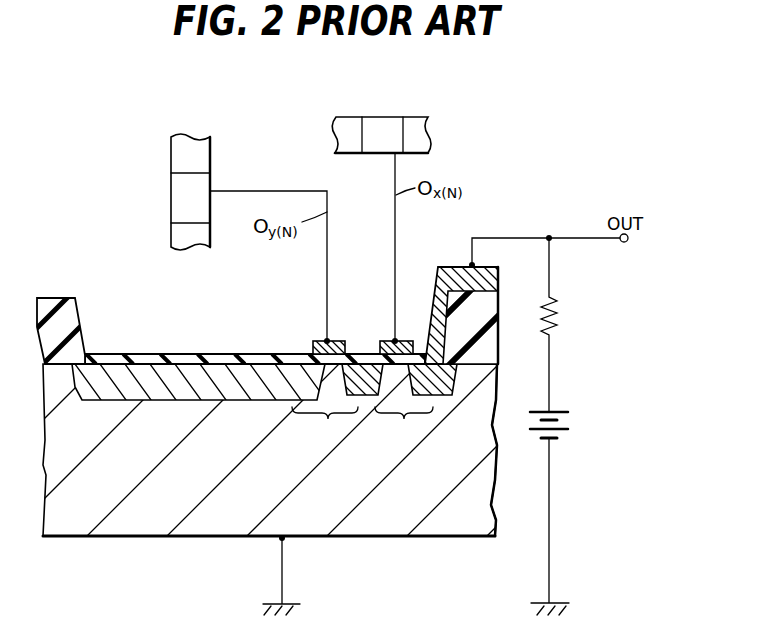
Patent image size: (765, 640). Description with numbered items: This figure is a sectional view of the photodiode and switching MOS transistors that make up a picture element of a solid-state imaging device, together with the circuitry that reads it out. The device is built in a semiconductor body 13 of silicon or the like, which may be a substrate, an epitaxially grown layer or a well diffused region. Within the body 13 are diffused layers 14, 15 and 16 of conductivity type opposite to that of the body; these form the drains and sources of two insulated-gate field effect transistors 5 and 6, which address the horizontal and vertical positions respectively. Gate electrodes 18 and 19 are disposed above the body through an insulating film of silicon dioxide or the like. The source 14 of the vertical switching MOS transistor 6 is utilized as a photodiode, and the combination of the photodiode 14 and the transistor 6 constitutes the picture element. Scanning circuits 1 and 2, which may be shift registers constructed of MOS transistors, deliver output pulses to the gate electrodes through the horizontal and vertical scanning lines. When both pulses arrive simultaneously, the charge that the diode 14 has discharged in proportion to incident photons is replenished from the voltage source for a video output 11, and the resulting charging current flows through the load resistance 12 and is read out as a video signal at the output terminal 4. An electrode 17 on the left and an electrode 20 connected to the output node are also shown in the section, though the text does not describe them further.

The scanning circuit 1 is at (386, 117).
The scanning circuit 2 is at (171, 205).
The output terminal 4 is at (624, 242).
The insulated-gate field effect transistor 5 is at (404, 424).
The vertical switching MOS transistor 6 is at (325, 424).
The voltage source for a video output 11 is at (567, 420).
The load resistance 12 is at (558, 320).
The semiconductor body 13 is at (433, 527).
The diffused layer 14 is at (183, 392).
The diffused layer 15 is at (364, 398).
The diffused layer 16 is at (441, 390).
The electrode 17 is at (68, 322).
The gate electrode 18 is at (315, 340).
The gate electrode 19 is at (390, 340).
The output electrode 20 is at (447, 273).